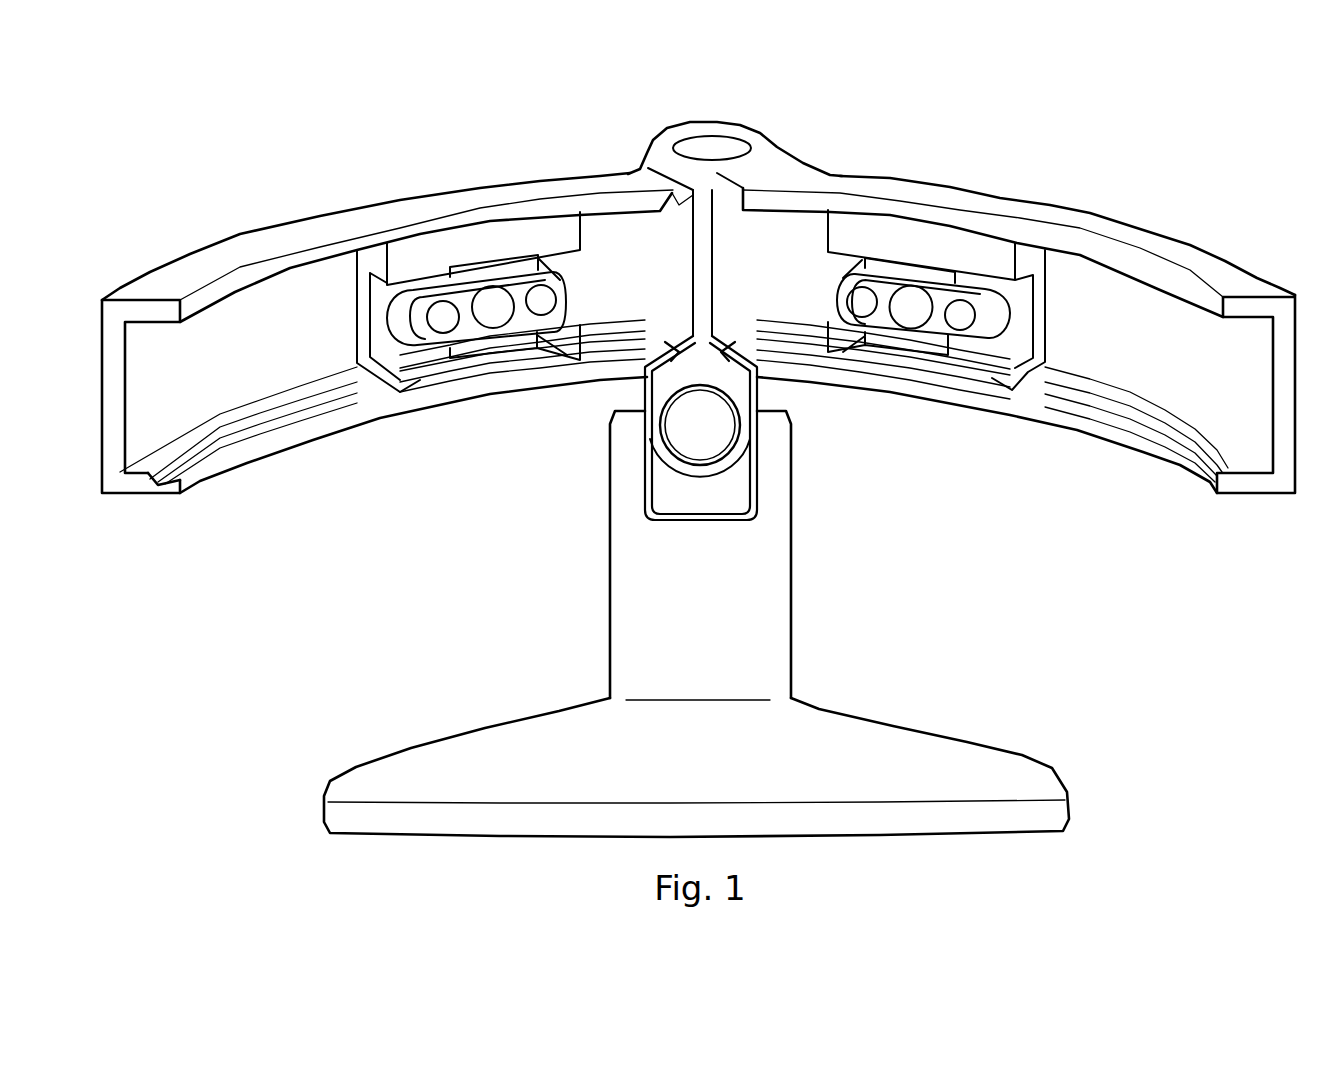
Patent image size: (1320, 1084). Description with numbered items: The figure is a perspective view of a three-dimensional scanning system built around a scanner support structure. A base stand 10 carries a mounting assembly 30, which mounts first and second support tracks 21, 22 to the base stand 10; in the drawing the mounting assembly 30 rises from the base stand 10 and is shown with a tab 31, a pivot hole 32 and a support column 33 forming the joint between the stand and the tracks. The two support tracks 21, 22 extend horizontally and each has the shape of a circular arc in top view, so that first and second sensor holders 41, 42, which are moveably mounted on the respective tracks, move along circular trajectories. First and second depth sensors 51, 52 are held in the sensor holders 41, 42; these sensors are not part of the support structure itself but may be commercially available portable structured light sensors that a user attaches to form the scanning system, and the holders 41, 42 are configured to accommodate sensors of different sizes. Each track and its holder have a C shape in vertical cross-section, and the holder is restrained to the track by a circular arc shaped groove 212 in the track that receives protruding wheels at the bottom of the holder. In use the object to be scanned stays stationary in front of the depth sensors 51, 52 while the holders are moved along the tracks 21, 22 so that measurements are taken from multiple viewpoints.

The base stand 10 is at (759, 644).
The first support track 21 is at (291, 237).
The second support track 22 is at (1090, 220).
The circular arc shaped groove 212 is at (157, 477).
The mounting assembly 30 is at (688, 493).
The mounting tab 31 is at (712, 148).
The pivot hole 32 is at (702, 425).
The support column 33 is at (795, 467).
The first sensor holder 41 is at (425, 362).
The second sensor holder 42 is at (997, 360).
The first depth sensor 51 is at (507, 322).
The second depth sensor 52 is at (921, 325).